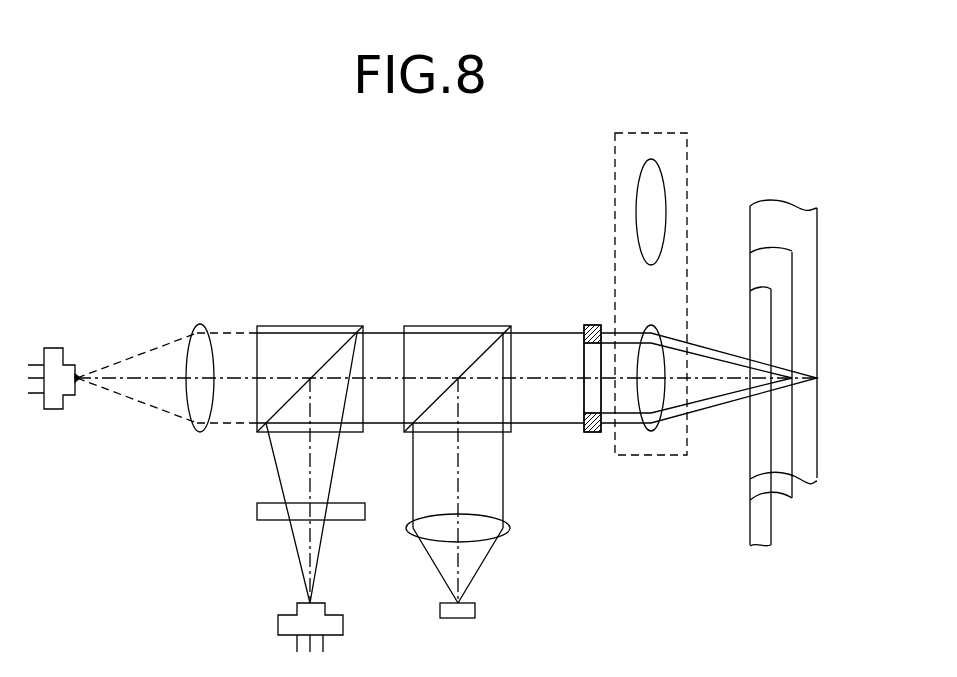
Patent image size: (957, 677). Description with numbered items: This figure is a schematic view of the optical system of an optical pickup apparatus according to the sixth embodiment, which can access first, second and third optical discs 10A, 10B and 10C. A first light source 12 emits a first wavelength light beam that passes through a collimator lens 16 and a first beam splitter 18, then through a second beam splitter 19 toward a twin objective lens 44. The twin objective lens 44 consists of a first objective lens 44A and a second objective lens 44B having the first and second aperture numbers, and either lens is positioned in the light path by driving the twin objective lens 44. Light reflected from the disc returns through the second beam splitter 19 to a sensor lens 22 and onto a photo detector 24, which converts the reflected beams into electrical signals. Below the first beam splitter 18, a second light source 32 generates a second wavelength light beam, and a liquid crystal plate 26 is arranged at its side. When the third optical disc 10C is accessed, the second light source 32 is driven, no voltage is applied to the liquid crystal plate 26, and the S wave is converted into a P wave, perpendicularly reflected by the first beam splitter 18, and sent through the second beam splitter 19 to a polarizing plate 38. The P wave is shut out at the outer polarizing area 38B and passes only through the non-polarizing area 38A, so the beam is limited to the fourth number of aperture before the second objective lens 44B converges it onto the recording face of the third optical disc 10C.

The first light source 12 is at (62, 348).
The collimator lens 16 is at (198, 331).
The first beam splitter 18 is at (363, 326).
The second beam splitter 19 is at (511, 326).
The liquid crystal plate 26 is at (355, 508).
The second light source 32 is at (343, 633).
The sensor lens 22 is at (509, 527).
The photo detector 24 is at (470, 614).
The polarizing plate 38 is at (592, 325).
The non-polarizing area 38A is at (588, 396).
The outer polarizing area 38B is at (591, 432).
The twin objective lens 44 is at (687, 133).
The first objective lens 44A is at (664, 192).
The second objective lens 44B is at (652, 326).
The first optical disc 10A is at (763, 520).
The second optical disc 10B is at (786, 348).
The third optical disc 10C is at (808, 288).